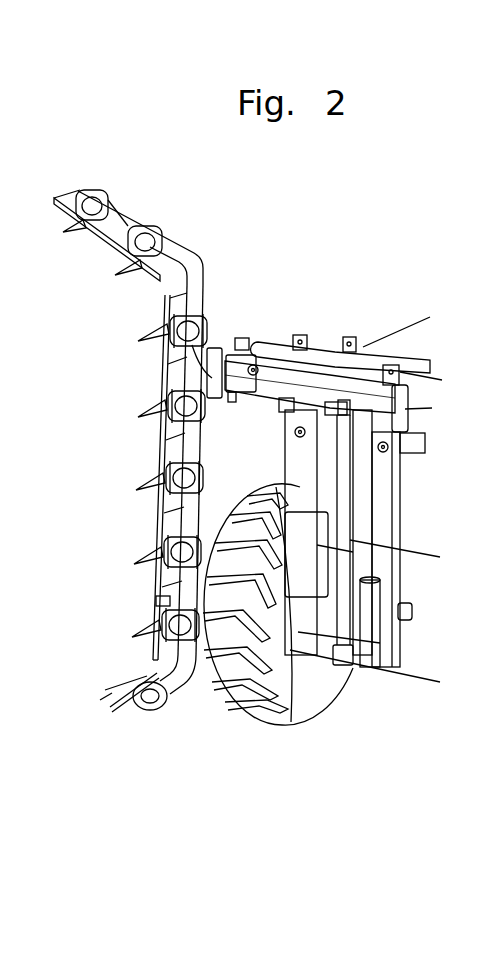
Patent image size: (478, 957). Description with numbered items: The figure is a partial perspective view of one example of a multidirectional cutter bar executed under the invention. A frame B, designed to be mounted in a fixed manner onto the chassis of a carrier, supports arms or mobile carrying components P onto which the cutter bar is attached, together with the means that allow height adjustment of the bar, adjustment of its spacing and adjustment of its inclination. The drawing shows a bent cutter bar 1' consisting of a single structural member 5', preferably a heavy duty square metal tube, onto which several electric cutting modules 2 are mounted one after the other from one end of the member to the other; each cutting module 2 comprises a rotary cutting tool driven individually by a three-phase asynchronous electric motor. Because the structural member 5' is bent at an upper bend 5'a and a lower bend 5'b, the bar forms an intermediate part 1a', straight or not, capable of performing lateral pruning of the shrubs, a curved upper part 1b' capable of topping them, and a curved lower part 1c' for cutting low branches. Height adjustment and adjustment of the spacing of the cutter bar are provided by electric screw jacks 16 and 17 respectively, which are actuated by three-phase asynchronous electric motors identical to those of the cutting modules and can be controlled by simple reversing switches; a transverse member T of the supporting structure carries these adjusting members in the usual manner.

The bent cutter bar 1' is at (115, 476).
The intermediate part 1a' is at (96, 604).
The curved upper part 1b' is at (147, 221).
The curved lower part 1c' is at (95, 693).
The cutting module 2 is at (62, 238).
The structural member 5' is at (115, 470).
The upper bend of structural member 5'a is at (159, 238).
The lower bend of structural member 5'b is at (187, 741).
The electric screw jack 16 is at (337, 571).
The electric screw jack 17 is at (355, 340).
The frame B is at (384, 553).
The mobile carrying component P is at (343, 403).
The transverse beam T is at (397, 322).